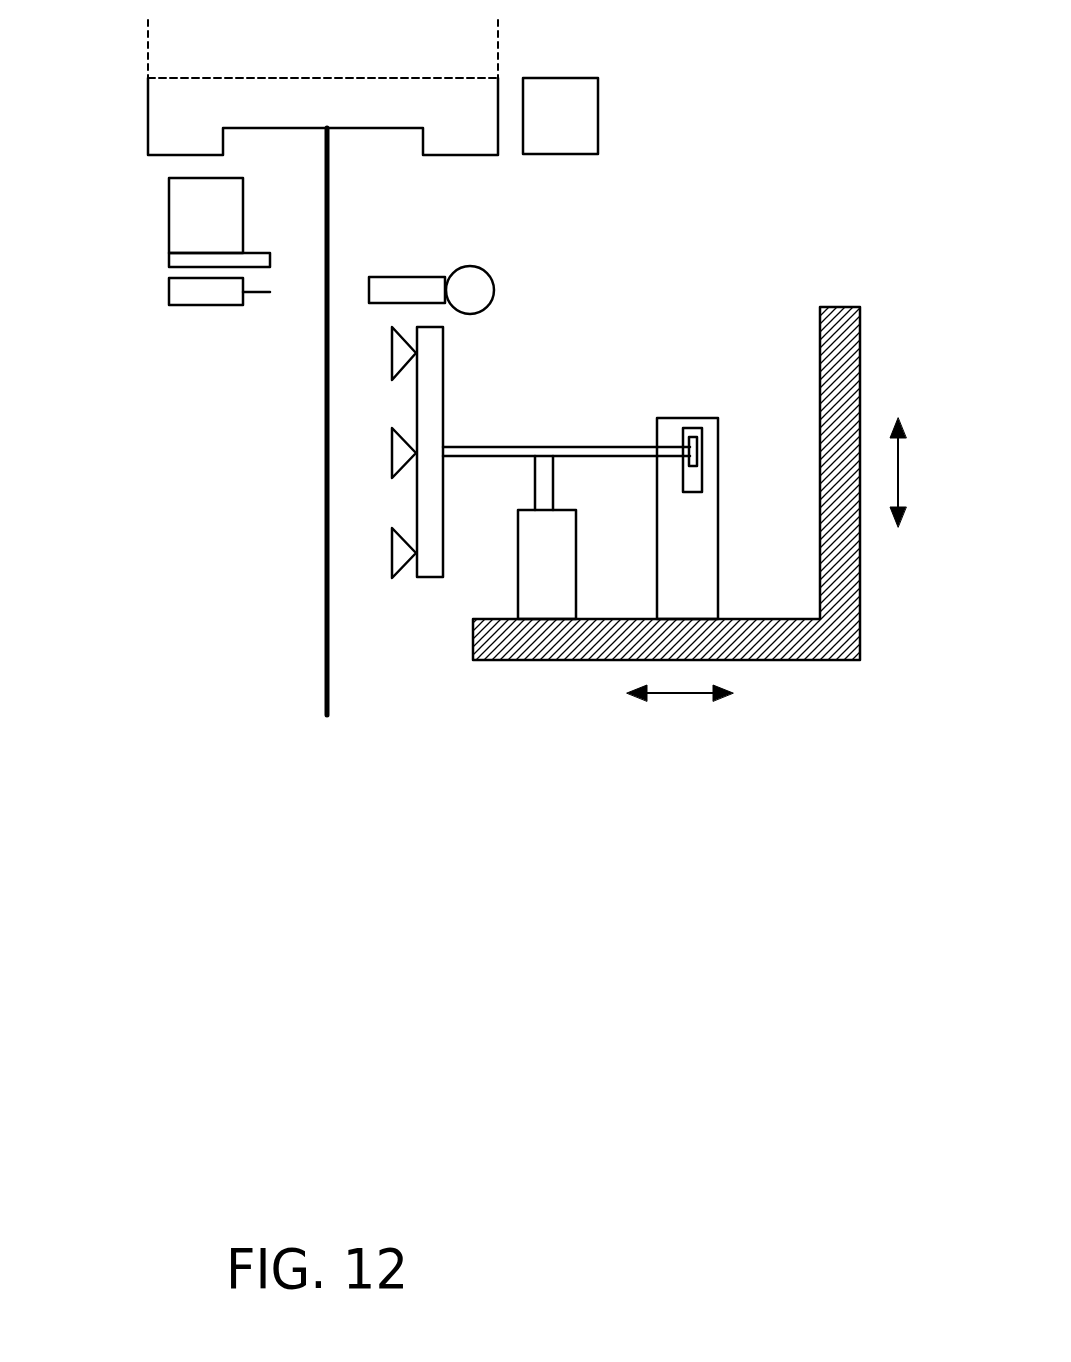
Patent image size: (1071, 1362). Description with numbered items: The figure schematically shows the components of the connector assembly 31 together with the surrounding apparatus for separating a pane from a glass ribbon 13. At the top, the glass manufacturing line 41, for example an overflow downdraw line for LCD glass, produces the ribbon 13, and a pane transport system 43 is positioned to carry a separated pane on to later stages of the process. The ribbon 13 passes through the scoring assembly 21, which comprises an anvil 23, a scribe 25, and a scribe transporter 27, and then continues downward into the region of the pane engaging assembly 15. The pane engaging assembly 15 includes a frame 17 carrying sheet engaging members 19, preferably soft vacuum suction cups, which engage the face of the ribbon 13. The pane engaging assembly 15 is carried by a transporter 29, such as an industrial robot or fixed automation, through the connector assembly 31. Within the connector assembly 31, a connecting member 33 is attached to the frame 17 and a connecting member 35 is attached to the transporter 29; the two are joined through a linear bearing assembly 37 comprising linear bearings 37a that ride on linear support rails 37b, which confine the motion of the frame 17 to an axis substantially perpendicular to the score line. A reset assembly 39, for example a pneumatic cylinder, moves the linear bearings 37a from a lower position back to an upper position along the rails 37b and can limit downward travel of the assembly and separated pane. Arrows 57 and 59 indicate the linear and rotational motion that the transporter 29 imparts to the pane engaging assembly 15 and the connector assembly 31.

The glass ribbon 13 is at (325, 640).
The pane engaging assembly 15 is at (430, 596).
The frame 17 is at (430, 380).
The sheet engaging members 19 is at (392, 353).
The scoring assembly 21 is at (298, 238).
The anvil 23 is at (413, 290).
The scribe 25 is at (200, 293).
The scribe transporter 27 is at (193, 215).
The transporter 29 is at (560, 660).
The connector assembly 31 is at (695, 467).
The connecting member 33 is at (470, 443).
The connecting member 35 is at (692, 562).
The linear bearing assembly 37 is at (695, 447).
The linear bearings 37a is at (691, 437).
The linear support rails 37b is at (703, 478).
The reset assembly 39 is at (553, 602).
The glass manufacturing line 41 is at (268, 72).
The pane transport system 43 is at (552, 95).
The arrow 57 is at (898, 465).
The arrow 59 is at (901, 612).